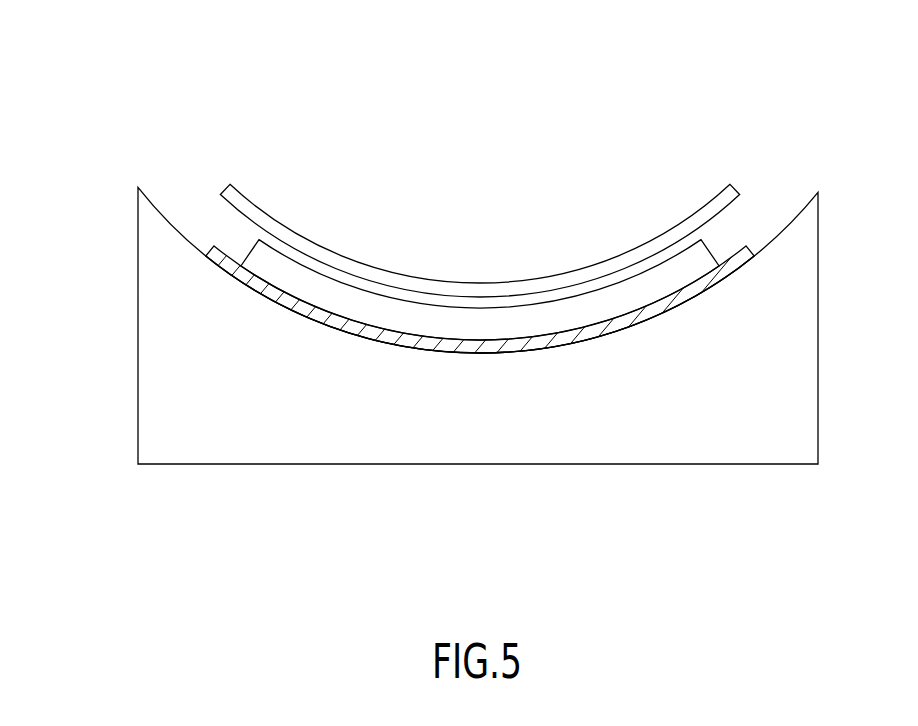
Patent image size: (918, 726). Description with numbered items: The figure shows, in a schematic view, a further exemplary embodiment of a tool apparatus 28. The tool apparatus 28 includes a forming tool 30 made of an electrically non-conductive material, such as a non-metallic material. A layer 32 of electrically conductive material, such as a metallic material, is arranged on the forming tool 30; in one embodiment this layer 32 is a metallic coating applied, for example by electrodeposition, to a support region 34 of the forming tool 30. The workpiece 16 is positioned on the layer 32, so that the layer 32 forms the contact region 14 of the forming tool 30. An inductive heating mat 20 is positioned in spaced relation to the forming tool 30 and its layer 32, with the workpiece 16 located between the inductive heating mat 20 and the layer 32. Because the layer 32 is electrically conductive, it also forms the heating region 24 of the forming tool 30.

The contact region 14 is at (213, 225).
The workpiece 16 is at (344, 302).
The inductive heating mat 20 is at (470, 283).
The heating region 24 is at (632, 318).
The tool apparatus 28 is at (154, 499).
The forming tool 30 is at (165, 331).
The layer 32 is at (422, 343).
The support region 34 is at (505, 353).